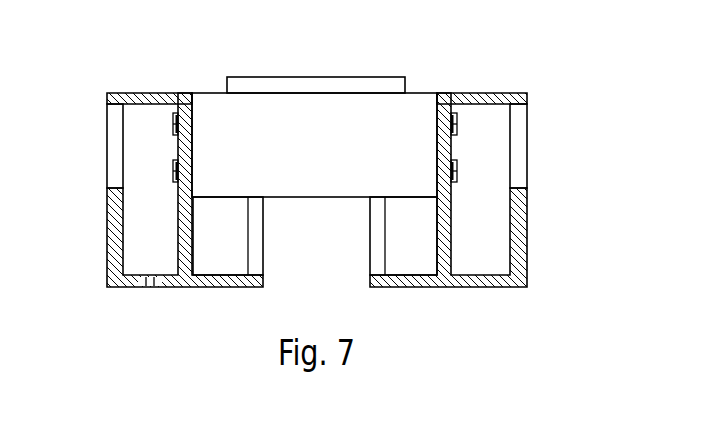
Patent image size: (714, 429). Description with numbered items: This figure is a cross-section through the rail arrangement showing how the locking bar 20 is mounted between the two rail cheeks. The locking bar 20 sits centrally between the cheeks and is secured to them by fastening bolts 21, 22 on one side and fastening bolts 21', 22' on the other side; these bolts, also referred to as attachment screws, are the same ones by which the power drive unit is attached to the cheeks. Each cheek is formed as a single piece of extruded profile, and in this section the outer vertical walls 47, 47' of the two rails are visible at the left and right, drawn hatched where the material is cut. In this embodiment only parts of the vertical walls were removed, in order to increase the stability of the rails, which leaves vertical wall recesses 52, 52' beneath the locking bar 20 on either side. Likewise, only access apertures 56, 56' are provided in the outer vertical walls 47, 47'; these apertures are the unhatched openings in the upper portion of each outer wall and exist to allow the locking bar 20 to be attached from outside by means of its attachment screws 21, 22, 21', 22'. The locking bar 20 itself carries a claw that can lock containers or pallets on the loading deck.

The locking bar 20 is at (323, 206).
The fastening bolt 21 is at (156, 127).
The fastening bolt 22 is at (156, 175).
The fastening bolt 21' is at (475, 128).
The fastening bolt 22' is at (475, 176).
The outer vertical wall 47 is at (162, 190).
The outer vertical wall 47' is at (473, 190).
The vertical wall recess 52 is at (247, 236).
The vertical wall recess 52' is at (383, 236).
The access aperture 56 is at (92, 146).
The access aperture 56' is at (543, 146).